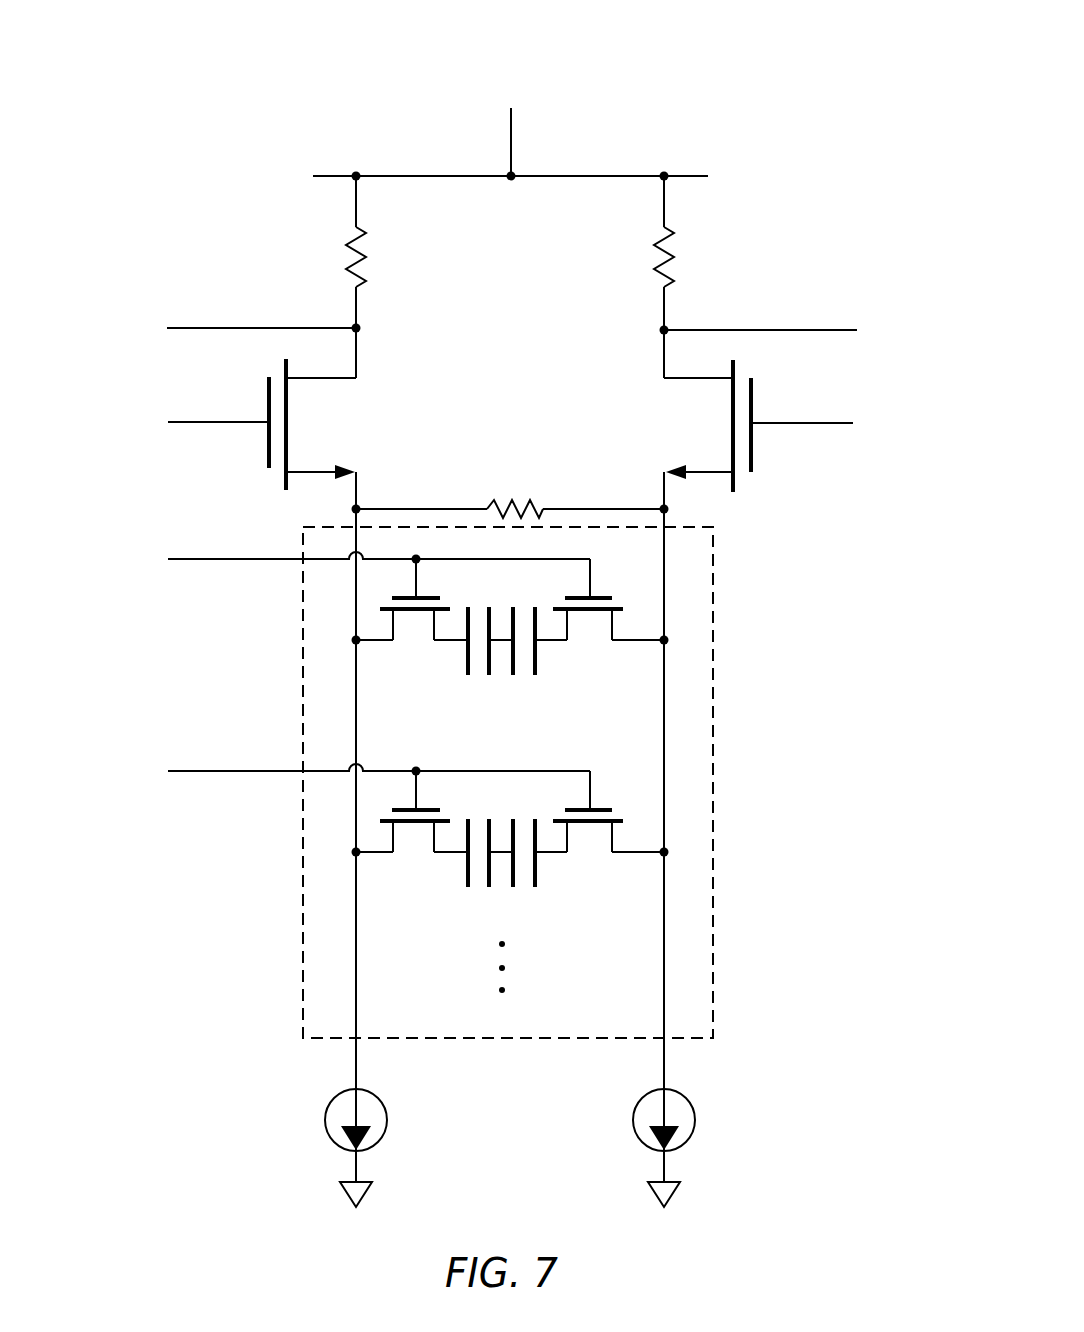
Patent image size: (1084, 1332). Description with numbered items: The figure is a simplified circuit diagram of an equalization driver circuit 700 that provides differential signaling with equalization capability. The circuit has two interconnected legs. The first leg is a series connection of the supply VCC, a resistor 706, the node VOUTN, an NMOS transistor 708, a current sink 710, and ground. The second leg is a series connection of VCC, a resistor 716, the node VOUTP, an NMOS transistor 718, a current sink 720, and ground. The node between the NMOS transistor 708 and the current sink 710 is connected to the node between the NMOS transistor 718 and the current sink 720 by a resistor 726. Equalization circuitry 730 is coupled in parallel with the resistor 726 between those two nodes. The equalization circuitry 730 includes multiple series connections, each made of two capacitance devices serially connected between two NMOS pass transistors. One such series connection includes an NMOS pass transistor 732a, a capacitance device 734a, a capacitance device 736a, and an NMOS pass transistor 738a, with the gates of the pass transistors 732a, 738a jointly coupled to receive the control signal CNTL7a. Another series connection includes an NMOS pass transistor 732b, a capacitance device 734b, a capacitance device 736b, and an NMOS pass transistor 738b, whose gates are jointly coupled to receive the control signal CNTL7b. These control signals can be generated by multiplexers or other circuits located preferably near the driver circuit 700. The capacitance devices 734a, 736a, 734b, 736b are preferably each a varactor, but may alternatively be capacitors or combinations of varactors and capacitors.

The equalization driver circuit 700 is at (800, 77).
The resistor 706 is at (367, 245).
The NMOS transistor 708 is at (326, 380).
The current sink 710 is at (386, 1108).
The resistor 716 is at (655, 265).
The NMOS transistor 718 is at (677, 380).
The current sink 720 is at (636, 1137).
The resistor 726 is at (519, 500).
The equalization circuitry 730 is at (713, 583).
The NMOS pass transistor 732a is at (393, 628).
The capacitance device 734a is at (468, 665).
The capacitance device 736a is at (535, 657).
The NMOS pass transistor 738a is at (612, 630).
The NMOS pass transistor 732b is at (393, 840).
The capacitance device 734b is at (468, 877).
The capacitance device 736b is at (535, 869).
The NMOS pass transistor 738b is at (612, 842).